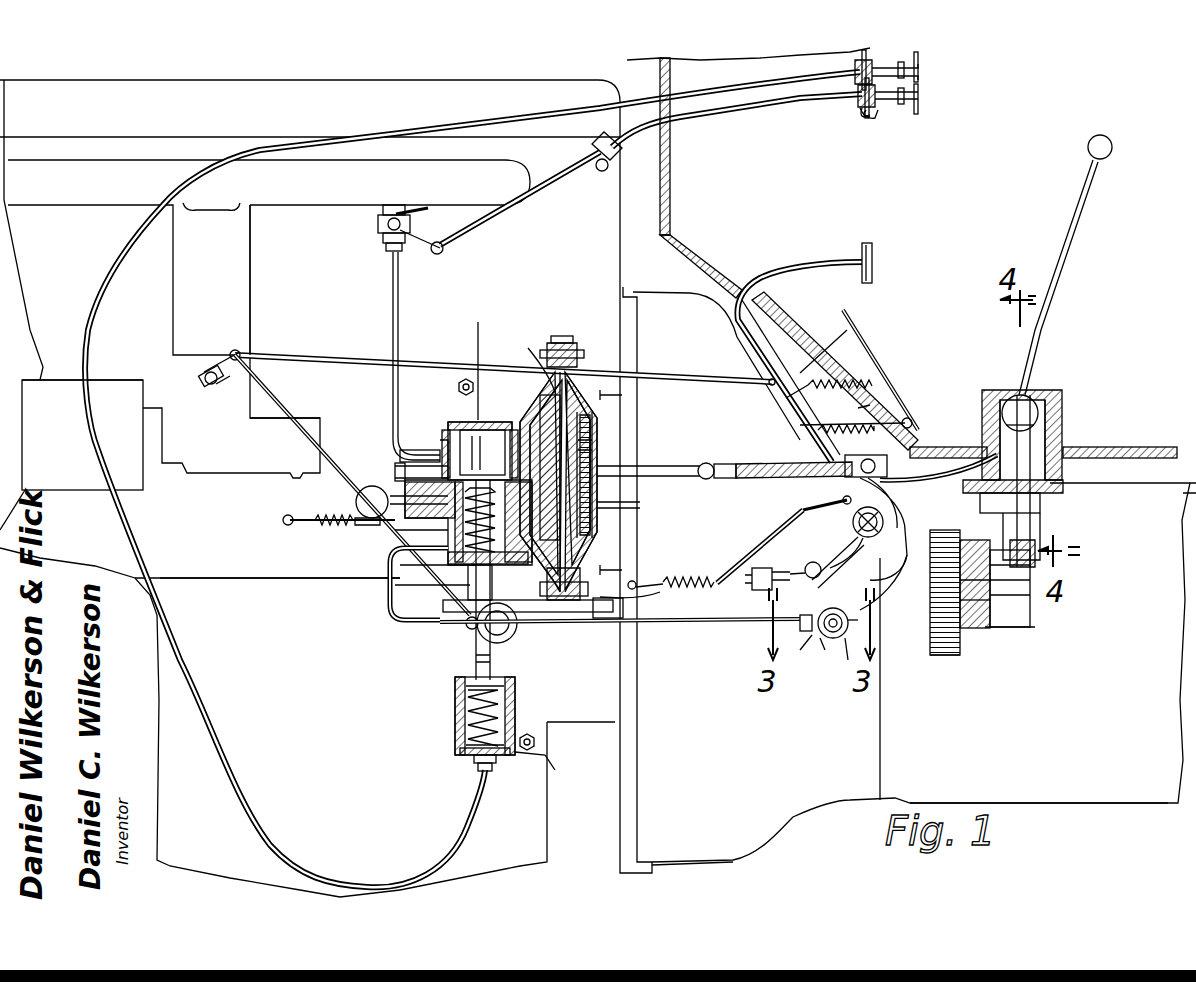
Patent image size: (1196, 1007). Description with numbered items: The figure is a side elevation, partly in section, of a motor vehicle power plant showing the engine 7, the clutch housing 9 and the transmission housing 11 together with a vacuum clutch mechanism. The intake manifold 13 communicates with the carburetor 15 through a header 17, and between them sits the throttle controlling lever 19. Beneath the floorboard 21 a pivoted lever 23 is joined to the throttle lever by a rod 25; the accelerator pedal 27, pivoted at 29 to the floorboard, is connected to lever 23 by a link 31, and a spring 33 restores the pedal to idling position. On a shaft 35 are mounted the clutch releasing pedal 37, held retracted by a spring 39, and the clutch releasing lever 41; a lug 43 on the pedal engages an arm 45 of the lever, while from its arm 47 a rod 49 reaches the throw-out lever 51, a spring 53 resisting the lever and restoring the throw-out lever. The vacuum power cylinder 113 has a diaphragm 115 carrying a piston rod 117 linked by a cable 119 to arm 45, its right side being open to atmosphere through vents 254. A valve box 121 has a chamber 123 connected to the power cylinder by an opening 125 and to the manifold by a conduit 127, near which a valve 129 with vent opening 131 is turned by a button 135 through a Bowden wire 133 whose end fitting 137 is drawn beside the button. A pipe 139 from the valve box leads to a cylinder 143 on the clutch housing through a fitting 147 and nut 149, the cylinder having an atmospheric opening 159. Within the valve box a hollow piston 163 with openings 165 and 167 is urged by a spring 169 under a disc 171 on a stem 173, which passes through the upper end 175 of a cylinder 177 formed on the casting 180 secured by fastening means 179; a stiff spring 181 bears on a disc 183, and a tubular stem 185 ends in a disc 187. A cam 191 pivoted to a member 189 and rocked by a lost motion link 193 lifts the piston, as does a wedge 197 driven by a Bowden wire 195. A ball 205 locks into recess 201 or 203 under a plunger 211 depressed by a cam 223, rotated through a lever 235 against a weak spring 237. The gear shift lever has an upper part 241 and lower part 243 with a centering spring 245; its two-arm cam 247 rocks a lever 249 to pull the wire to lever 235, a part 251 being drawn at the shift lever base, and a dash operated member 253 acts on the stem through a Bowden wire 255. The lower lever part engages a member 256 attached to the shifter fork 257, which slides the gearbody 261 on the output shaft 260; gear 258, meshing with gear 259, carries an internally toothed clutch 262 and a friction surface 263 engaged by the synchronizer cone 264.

The engine 7 is at (208, 560).
The clutch housing 9 is at (760, 820).
The transmission housing 11 is at (1102, 787).
The intake manifold 13 is at (372, 172).
The carburetor 15 is at (190, 468).
The header 17 is at (243, 305).
The throttle controlling lever 19 is at (198, 365).
The floorboard 21 is at (728, 275).
The pivoted lever 23 is at (782, 335).
The rod 25 is at (676, 376).
The accelerator pedal 27 is at (845, 310).
The pivot 29 is at (912, 420).
The link 31 is at (850, 333).
The spring 33 is at (855, 400).
The shaft 35 is at (843, 500).
The clutch releasing pedal 37 is at (780, 402).
The spring 39 is at (876, 400).
The clutch releasing lever 41 is at (883, 542).
The lug 43 is at (918, 478).
The arm 45 is at (890, 492).
The arm 47 is at (860, 566).
The rod 49 is at (811, 585).
The throw-out lever 51 is at (762, 592).
The spring 53 is at (706, 585).
The vacuum power cylinder 113 is at (545, 340).
The diaphragm 115 is at (588, 350).
The piston rod 117 is at (702, 462).
The cable 119 is at (758, 462).
The valve box 121 is at (450, 420).
The chamber 123 is at (484, 356).
The opening 125 is at (524, 359).
The conduit 127 is at (400, 302).
The valve 129 is at (380, 224).
The vent opening 131 is at (430, 210).
The Bowden wire 133 is at (440, 243).
The button 135 is at (920, 90).
The bracket 137 is at (878, 118).
The pipe 139 is at (390, 612).
The cylinder 143 is at (847, 650).
The fitting 147 is at (820, 630).
The nut 149 is at (797, 627).
The opening 159 is at (845, 675).
The hollow piston 163 is at (445, 440).
The opening 165 is at (595, 452).
The opening 167 is at (398, 565).
The spring 169 is at (600, 470).
The disc 171 is at (438, 458).
The stem 173 is at (480, 570).
The upper end 175 is at (455, 684).
The cylinder 177 is at (455, 726).
The fastening means 179 is at (462, 378).
The casting 180 is at (460, 380).
The spring 181 is at (455, 704).
The disc 183 is at (522, 760).
The tubular stem 185 is at (395, 585).
The disc 187 is at (460, 630).
The member 189 is at (466, 630).
The cam 191 is at (515, 650).
The lost motion link 193 is at (285, 402).
The Bowden wire 195 is at (780, 520).
The wedge 197 is at (528, 618).
The recess 201 is at (482, 436).
The recess 203 is at (400, 532).
The ball 205 is at (405, 470).
The plunger 211 is at (362, 528).
The cam 223 is at (318, 480).
The lever 235 is at (352, 522).
The weak spring 237 is at (312, 515).
The upper part of gear shift lever 241 is at (1060, 282).
The lower part of gear shift lever 243 is at (1035, 525).
The centering spring 245 is at (1010, 400).
The two-arm cam 247 is at (1050, 400).
The lever 249 is at (1050, 440).
The plate 251 is at (1010, 455).
The dash operated member 253 is at (920, 60).
The vents 254 is at (590, 397).
The Bowden wire 255 is at (474, 760).
The member 256 is at (1042, 540).
The shifter fork 257 is at (888, 100).
The gear 258 is at (940, 607).
The gear 259 is at (945, 645).
The output shaft 260 is at (945, 640).
The gearbody 261 is at (1005, 628).
The internally toothed clutch 262 is at (990, 640).
The friction surface 263 is at (992, 628).
The synchronizer cone 264 is at (1000, 620).